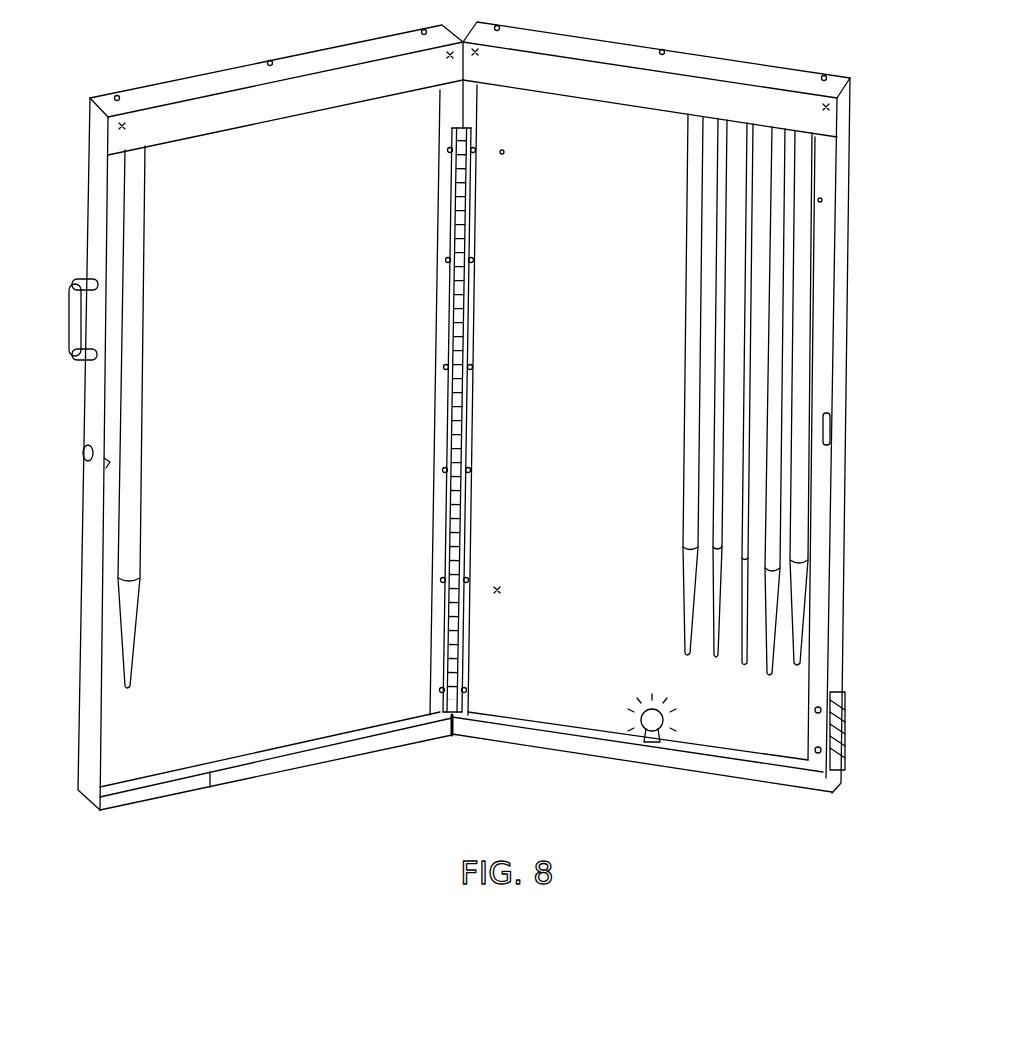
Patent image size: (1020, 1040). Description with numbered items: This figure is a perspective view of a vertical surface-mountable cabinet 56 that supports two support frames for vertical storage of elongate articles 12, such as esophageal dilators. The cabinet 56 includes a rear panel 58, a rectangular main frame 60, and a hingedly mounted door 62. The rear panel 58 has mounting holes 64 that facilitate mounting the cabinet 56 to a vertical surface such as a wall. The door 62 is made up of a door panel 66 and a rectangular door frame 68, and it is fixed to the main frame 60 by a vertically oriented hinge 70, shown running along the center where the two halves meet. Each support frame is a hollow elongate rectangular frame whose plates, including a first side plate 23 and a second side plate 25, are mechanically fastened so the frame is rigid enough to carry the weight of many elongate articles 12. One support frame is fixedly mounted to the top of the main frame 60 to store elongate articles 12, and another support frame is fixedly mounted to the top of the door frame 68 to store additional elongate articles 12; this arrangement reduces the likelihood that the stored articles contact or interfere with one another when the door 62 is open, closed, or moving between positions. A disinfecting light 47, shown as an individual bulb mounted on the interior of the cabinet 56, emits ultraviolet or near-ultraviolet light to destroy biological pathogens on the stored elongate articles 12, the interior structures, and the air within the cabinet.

The elongate articles 12 is at (133, 307).
The first side plate 23 is at (607, 83).
The second side plate 25 is at (312, 95).
The disinfecting light 47 is at (665, 720).
The cabinet 56 is at (687, 822).
The rear panel 58 is at (558, 401).
The main frame 60 is at (843, 122).
The door 62 is at (170, 805).
The mounting holes 64 is at (502, 152).
The door panel 66 is at (285, 400).
The door frame 68 is at (95, 583).
The hinge 70 is at (462, 321).